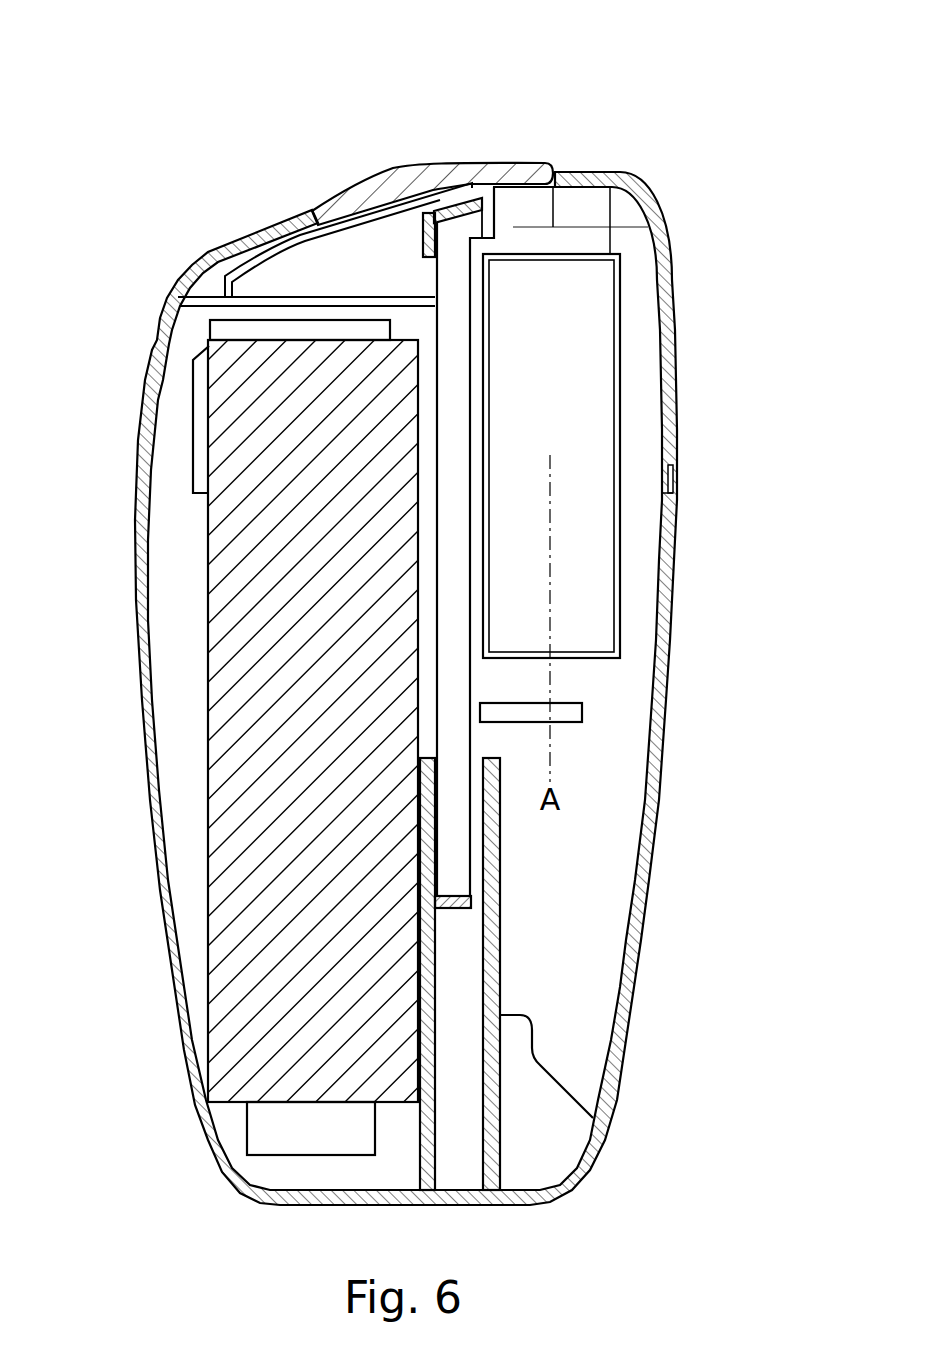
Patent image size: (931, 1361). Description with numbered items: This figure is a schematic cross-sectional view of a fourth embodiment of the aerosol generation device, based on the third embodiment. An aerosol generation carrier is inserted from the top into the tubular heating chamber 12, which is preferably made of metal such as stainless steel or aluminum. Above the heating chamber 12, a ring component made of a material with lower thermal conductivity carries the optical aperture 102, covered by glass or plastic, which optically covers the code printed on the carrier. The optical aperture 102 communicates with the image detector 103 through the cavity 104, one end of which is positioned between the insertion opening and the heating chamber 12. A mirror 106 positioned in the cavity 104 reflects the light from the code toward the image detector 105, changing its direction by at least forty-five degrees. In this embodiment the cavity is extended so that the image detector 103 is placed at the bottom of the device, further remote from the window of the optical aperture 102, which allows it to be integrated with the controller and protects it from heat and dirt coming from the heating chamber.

The tubular heating chamber 12 is at (588, 397).
The optical aperture 102 is at (495, 225).
The image detector 103 is at (450, 895).
The cavity 104 is at (455, 432).
The image detector 105 is at (423, 233).
The mirror 106 is at (465, 204).